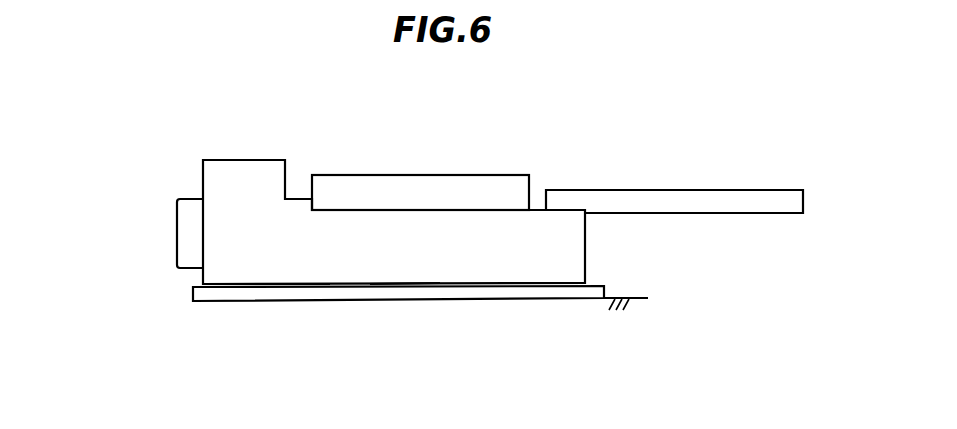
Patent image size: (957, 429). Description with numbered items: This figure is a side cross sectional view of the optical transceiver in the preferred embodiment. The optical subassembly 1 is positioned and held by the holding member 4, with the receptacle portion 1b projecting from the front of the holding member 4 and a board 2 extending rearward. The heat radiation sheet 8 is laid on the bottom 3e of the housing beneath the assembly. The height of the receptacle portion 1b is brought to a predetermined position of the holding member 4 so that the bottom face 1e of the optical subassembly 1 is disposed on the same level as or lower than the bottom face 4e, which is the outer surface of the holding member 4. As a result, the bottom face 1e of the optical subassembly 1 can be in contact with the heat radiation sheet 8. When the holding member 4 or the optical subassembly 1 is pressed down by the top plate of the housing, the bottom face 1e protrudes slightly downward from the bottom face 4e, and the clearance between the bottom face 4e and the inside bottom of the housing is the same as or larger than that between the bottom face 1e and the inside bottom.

The optical subassembly 1 is at (330, 175).
The receptacle portion 1b is at (182, 199).
The bottom face 1e is at (404, 287).
The board 2 is at (680, 190).
The bottom 3e is at (637, 298).
The holding member 4 is at (432, 223).
The bottom face 4e is at (292, 285).
The heat radiation sheet 8 is at (223, 303).